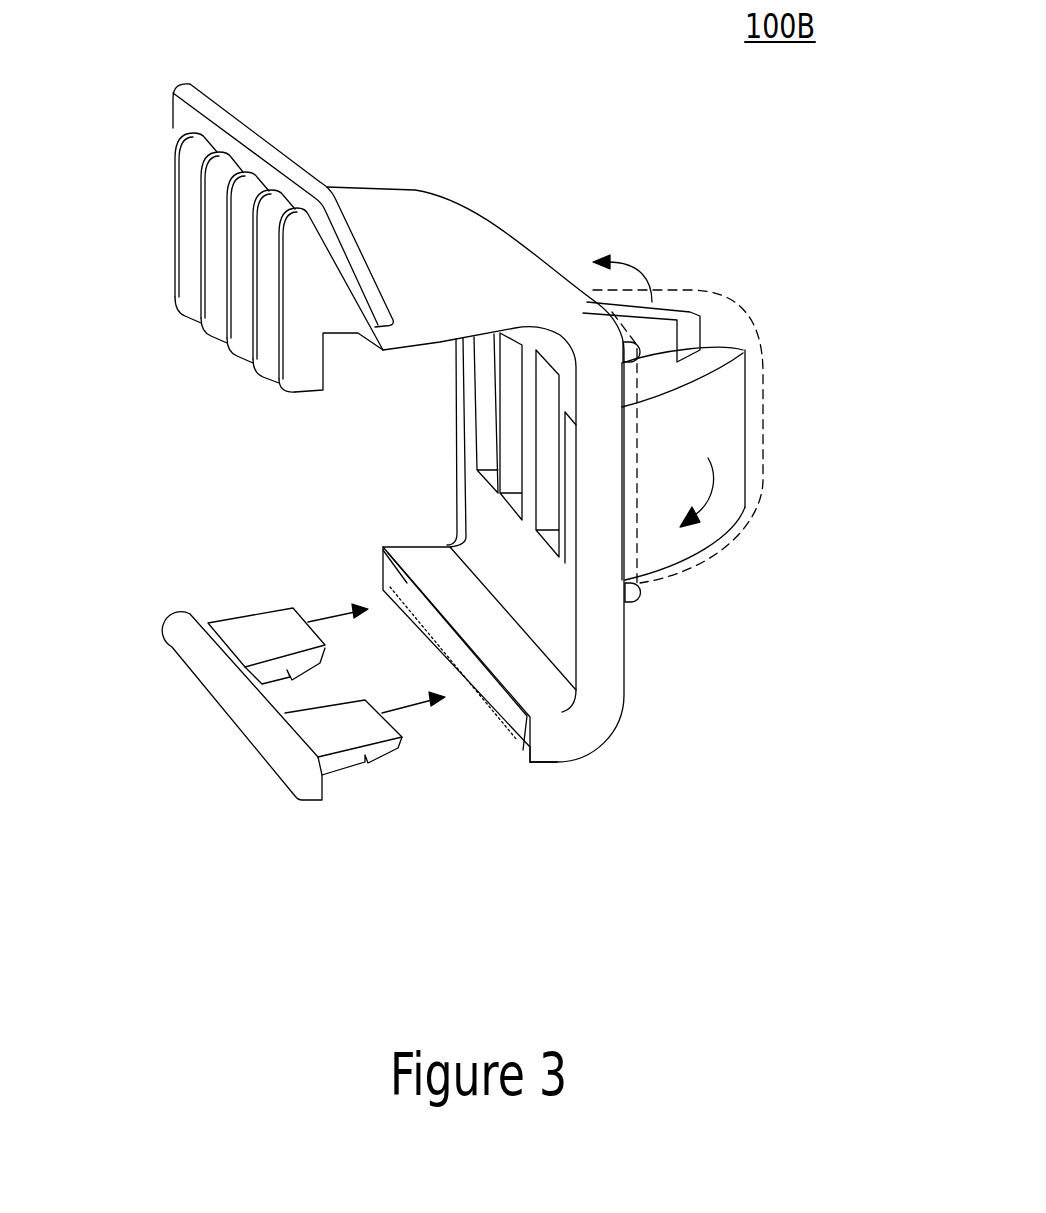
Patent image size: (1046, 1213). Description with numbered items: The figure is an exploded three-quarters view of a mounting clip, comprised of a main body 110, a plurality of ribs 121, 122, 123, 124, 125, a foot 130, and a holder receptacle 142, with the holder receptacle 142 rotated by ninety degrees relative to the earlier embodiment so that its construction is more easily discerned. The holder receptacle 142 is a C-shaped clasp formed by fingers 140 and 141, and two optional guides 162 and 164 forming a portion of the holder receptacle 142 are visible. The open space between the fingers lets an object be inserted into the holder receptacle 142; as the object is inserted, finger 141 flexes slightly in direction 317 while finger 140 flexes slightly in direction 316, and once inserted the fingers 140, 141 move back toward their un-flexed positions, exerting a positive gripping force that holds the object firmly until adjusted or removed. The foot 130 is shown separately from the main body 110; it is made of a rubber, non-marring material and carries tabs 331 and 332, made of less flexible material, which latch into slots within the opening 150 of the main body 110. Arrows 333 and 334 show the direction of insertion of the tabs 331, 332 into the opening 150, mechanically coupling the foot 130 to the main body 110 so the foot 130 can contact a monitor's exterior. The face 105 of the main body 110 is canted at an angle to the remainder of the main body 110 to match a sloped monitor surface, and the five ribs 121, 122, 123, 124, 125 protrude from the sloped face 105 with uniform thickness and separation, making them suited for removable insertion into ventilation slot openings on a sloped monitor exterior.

The face 105 is at (190, 116).
The main body 110 is at (465, 245).
The rib 121 is at (287, 387).
The rib 122 is at (260, 367).
The rib 123 is at (233, 350).
The rib 124 is at (203, 330).
The rib 125 is at (180, 307).
The foot 130 is at (283, 752).
The finger 140 is at (737, 422).
The finger 141 is at (733, 390).
The holder receptacle 142 is at (745, 537).
The opening 150 is at (523, 722).
The guide 162 is at (580, 297).
The guide 164 is at (640, 590).
The direction 316 is at (640, 262).
The direction 317 is at (730, 480).
The tab 331 is at (378, 753).
The tab 332 is at (245, 623).
The arrow 333 is at (308, 622).
The arrow 334 is at (418, 707).